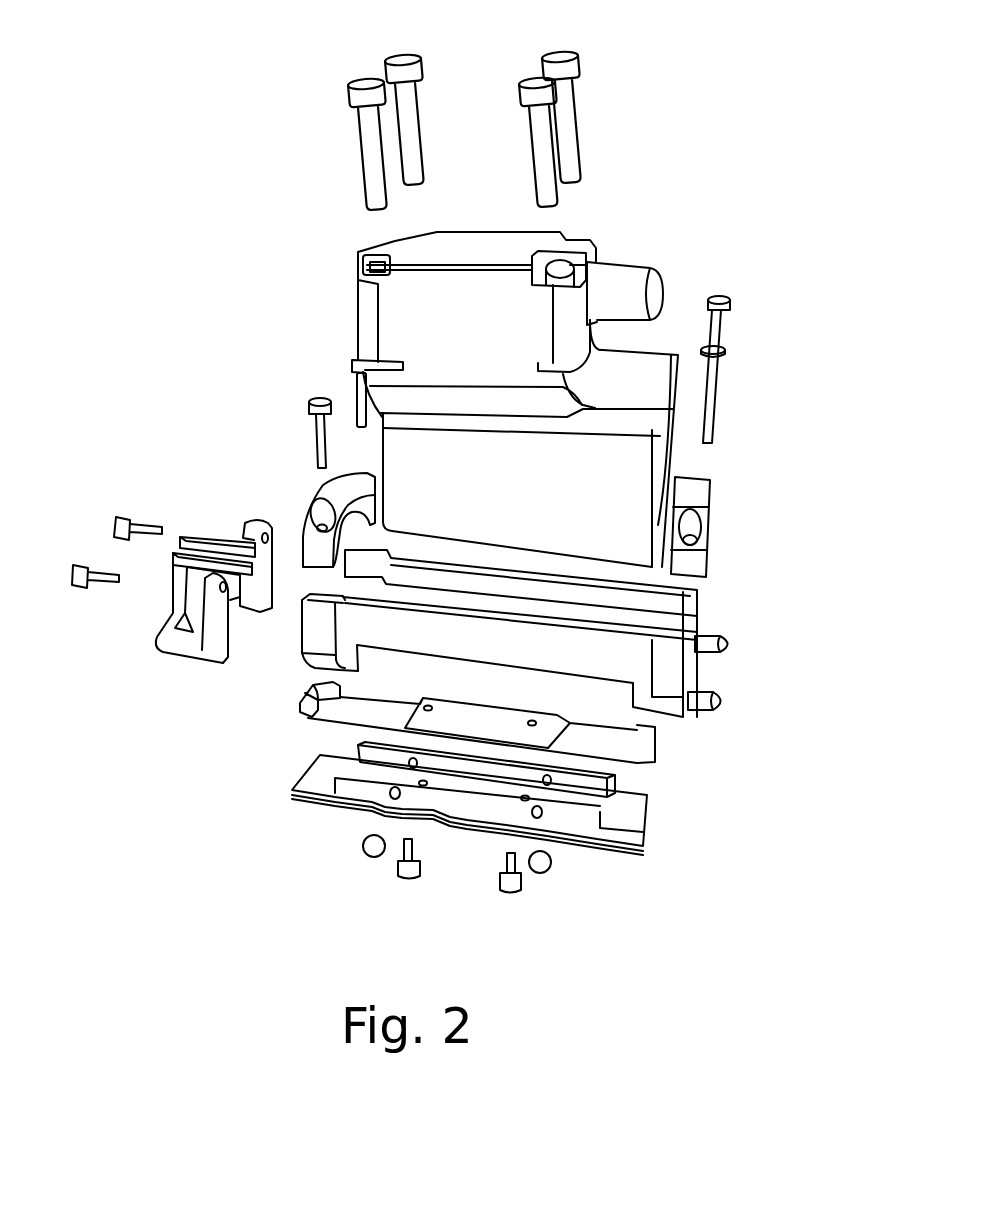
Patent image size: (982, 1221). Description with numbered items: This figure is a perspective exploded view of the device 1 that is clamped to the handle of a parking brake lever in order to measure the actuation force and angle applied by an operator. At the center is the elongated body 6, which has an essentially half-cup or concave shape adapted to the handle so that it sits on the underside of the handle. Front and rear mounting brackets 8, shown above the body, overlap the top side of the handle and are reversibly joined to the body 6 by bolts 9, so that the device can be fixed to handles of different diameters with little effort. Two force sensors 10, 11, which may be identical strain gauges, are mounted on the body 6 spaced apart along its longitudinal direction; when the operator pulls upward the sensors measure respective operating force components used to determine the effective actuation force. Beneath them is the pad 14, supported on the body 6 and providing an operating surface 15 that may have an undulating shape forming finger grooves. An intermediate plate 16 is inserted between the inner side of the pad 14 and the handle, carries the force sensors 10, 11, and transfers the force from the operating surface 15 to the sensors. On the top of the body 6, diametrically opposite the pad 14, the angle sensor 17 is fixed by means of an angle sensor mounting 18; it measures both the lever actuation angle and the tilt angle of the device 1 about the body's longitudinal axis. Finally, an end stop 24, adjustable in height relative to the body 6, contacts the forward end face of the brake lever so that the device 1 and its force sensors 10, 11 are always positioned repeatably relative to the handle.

The device 1 is at (175, 176).
The body 6 is at (666, 630).
The mounting brackets 8 is at (337, 490).
The bolts 9 is at (311, 437).
The force sensor 10 is at (382, 880).
The force sensor 11 is at (541, 891).
The pad 14 is at (395, 803).
The operating surface 15 is at (440, 815).
The intermediate plate 16 is at (358, 717).
The angle sensor 17 is at (467, 308).
The angle sensor mounting 18 is at (627, 488).
The end stop 24 is at (203, 537).